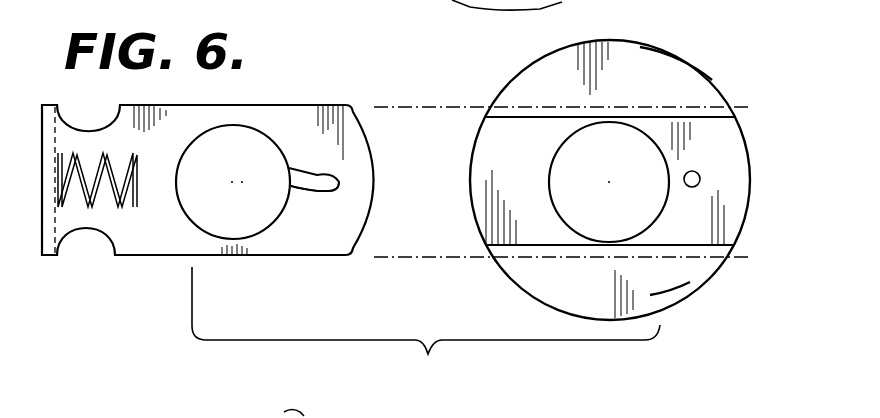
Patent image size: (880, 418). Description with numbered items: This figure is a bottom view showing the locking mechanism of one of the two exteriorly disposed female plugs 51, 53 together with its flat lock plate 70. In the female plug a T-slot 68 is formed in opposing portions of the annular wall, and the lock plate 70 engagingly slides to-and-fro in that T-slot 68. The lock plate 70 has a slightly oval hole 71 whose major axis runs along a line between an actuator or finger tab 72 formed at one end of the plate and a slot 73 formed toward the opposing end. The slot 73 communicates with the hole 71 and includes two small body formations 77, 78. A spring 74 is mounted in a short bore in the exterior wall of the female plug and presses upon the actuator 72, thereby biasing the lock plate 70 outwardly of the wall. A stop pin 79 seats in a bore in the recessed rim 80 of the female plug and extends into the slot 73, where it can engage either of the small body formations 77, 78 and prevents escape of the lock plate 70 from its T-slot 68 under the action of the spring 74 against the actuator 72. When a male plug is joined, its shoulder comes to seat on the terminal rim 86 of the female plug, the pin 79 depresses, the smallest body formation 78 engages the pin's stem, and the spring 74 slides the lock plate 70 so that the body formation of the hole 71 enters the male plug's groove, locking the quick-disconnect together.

The lock plate 70 is at (158, 260).
The hole 71 is at (243, 147).
The actuator or finger tab 72 is at (42, 112).
The slot 73 is at (295, 186).
The spring 74 is at (110, 230).
The small body formation 77 is at (317, 174).
The smallest body formation 78 is at (332, 192).
The stop pin 79 is at (692, 187).
The recessed rim 80 is at (720, 152).
The terminal rim 86 is at (655, 62).
The exteriorly disposed female plug 51 is at (742, 54).
The exteriorly disposed female plug 53 is at (690, 62).
The T-slot 68 is at (552, 232).